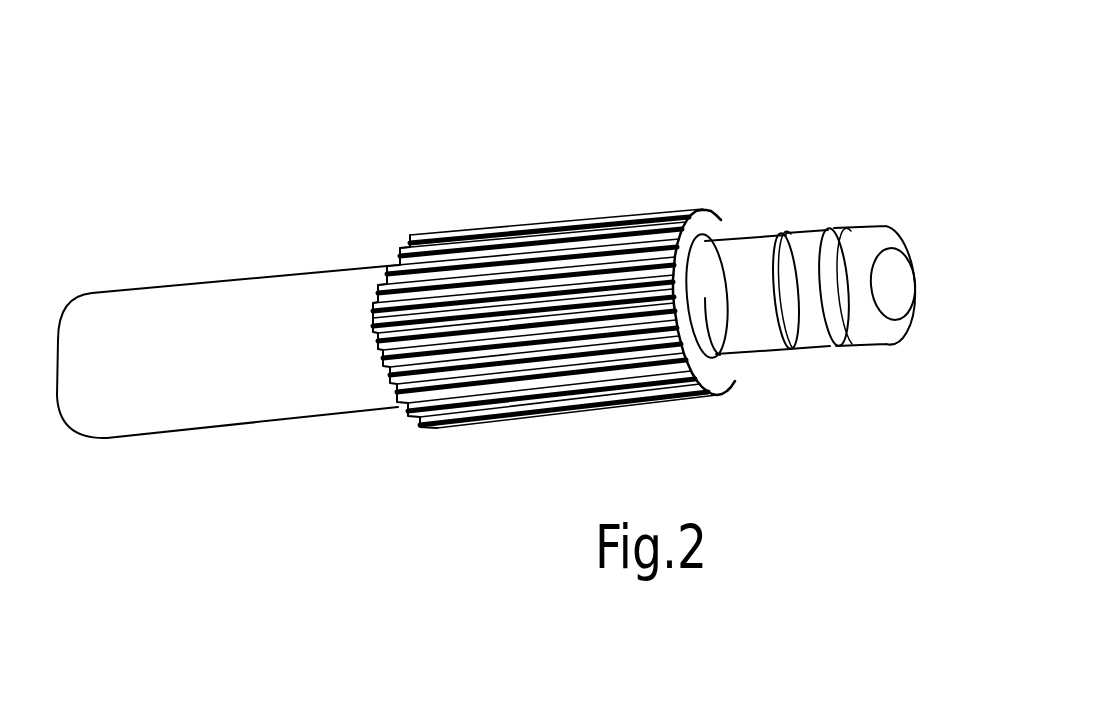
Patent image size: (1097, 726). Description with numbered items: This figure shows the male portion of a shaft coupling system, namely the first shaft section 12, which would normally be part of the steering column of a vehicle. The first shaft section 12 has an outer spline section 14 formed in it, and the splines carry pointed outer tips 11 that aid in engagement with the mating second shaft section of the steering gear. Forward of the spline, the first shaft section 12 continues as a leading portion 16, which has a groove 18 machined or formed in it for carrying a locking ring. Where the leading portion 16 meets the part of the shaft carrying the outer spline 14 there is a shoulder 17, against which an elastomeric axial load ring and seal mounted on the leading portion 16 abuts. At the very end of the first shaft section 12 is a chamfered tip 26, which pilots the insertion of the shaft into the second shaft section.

The first shaft section 12 is at (433, 180).
The outer spline section 14 is at (527, 254).
The shoulder 17 is at (720, 214).
The pointed outer tips 11 is at (732, 370).
The leading portion 16 is at (755, 236).
The groove 18 is at (807, 236).
The chamfered tip 26 is at (887, 237).